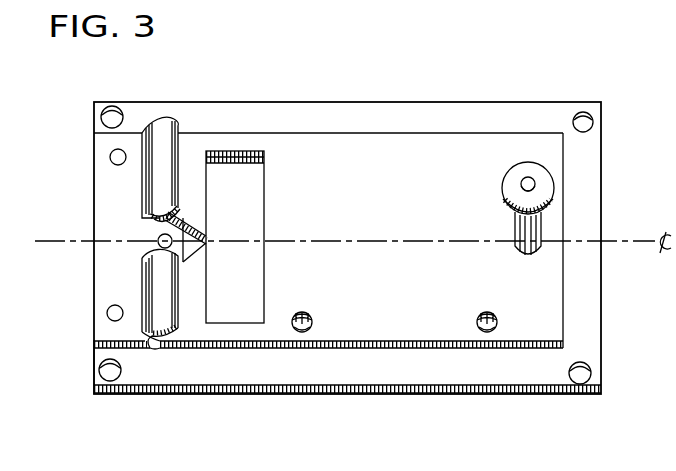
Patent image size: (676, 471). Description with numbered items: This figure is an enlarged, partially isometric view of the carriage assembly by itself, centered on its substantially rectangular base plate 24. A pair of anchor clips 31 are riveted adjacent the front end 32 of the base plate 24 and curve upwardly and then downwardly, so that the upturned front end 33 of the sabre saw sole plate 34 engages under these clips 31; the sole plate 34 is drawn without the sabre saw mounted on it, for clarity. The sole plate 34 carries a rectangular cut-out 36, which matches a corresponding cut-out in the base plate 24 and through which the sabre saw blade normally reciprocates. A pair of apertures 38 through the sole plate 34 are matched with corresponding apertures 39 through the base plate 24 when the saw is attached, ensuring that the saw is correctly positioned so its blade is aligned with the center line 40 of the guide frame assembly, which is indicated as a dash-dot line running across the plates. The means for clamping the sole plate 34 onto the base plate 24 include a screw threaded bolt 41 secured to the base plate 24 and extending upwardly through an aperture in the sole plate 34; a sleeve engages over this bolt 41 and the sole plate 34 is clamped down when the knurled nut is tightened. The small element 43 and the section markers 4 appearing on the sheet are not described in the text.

The base plate 24 is at (350, 372).
The anchor clips 31 is at (163, 277).
The front end 32 is at (92, 352).
The upturned front end 33 is at (160, 345).
The sole plate 34 is at (417, 150).
The rectangular cut-out 36 is at (264, 197).
The apertures 38 is at (489, 312).
The apertures 39 is at (487, 330).
The center line 40 is at (55, 240).
The screw threaded bolt 41 is at (521, 180).
The stud 43 is at (537, 172).
The section line 4- 4 is at (67, 240).